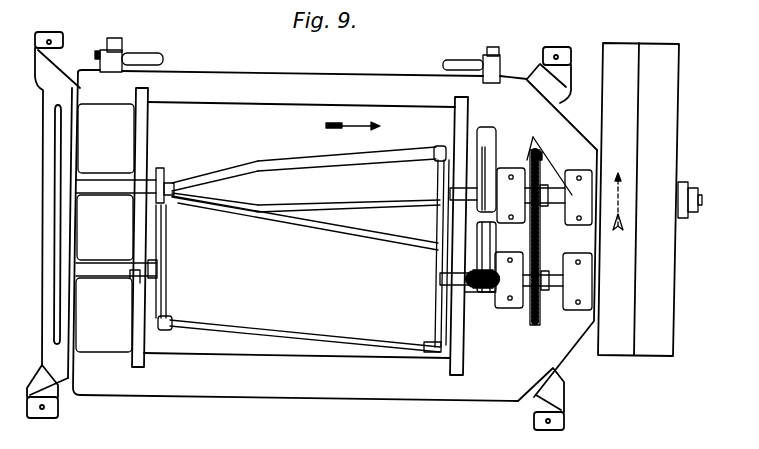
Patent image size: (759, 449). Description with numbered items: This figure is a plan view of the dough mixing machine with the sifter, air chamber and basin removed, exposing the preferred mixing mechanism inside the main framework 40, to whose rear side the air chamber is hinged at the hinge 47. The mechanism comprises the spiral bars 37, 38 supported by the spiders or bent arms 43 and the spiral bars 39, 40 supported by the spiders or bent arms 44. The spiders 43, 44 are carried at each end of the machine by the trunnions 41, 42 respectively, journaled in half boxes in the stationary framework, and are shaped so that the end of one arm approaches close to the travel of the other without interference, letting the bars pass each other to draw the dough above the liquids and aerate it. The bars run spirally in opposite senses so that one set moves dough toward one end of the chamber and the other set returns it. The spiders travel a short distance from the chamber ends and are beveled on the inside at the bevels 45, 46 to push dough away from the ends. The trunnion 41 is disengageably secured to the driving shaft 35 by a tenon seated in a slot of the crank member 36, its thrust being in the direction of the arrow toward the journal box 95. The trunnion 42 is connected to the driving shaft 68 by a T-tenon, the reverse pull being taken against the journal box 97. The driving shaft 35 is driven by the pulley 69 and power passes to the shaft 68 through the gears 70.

The driving shaft 35 is at (702, 200).
The crank member 36 is at (500, 153).
The spiral bar 37 is at (301, 158).
The spiral bar 38 is at (358, 231).
The spiral bar 39 is at (315, 207).
The spiral bar 40 is at (295, 342).
The trunnion 41 is at (148, 182).
The trunnion 42 is at (134, 276).
The spider 43 is at (165, 172).
The spider 44 is at (168, 294).
The bevel 45 is at (176, 198).
The bevel 46 is at (168, 258).
The hinge 47 is at (142, 56).
The driving shaft 68 is at (555, 300).
The pulley 69 is at (614, 346).
The gears 70 is at (538, 257).
The journal box 95 is at (542, 160).
The journal box 97 is at (510, 279).